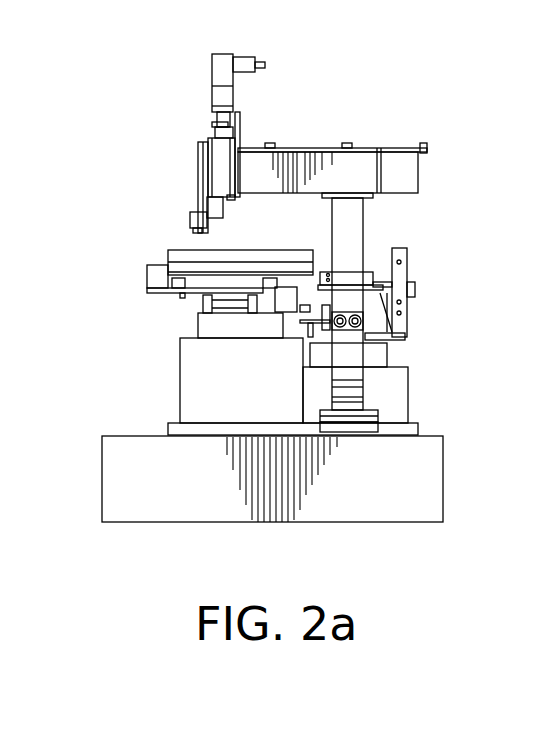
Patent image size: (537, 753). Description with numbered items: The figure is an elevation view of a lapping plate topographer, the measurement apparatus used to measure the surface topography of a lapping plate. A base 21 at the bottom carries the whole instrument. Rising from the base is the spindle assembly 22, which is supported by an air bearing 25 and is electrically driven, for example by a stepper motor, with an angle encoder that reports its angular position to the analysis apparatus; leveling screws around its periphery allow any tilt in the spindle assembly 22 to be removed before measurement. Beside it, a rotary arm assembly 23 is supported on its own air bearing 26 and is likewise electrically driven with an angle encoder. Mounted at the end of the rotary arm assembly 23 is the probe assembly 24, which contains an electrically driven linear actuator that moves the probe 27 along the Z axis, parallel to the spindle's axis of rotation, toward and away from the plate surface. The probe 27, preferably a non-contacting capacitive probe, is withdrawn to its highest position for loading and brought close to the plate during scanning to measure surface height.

The base 21 is at (443, 434).
The spindle assembly 22 is at (168, 253).
The rotary arm assembly 23 is at (287, 147).
The probe assembly 24 is at (207, 147).
The air bearing 25 is at (198, 322).
The air bearing 26 is at (400, 353).
The probe 27 is at (190, 232).